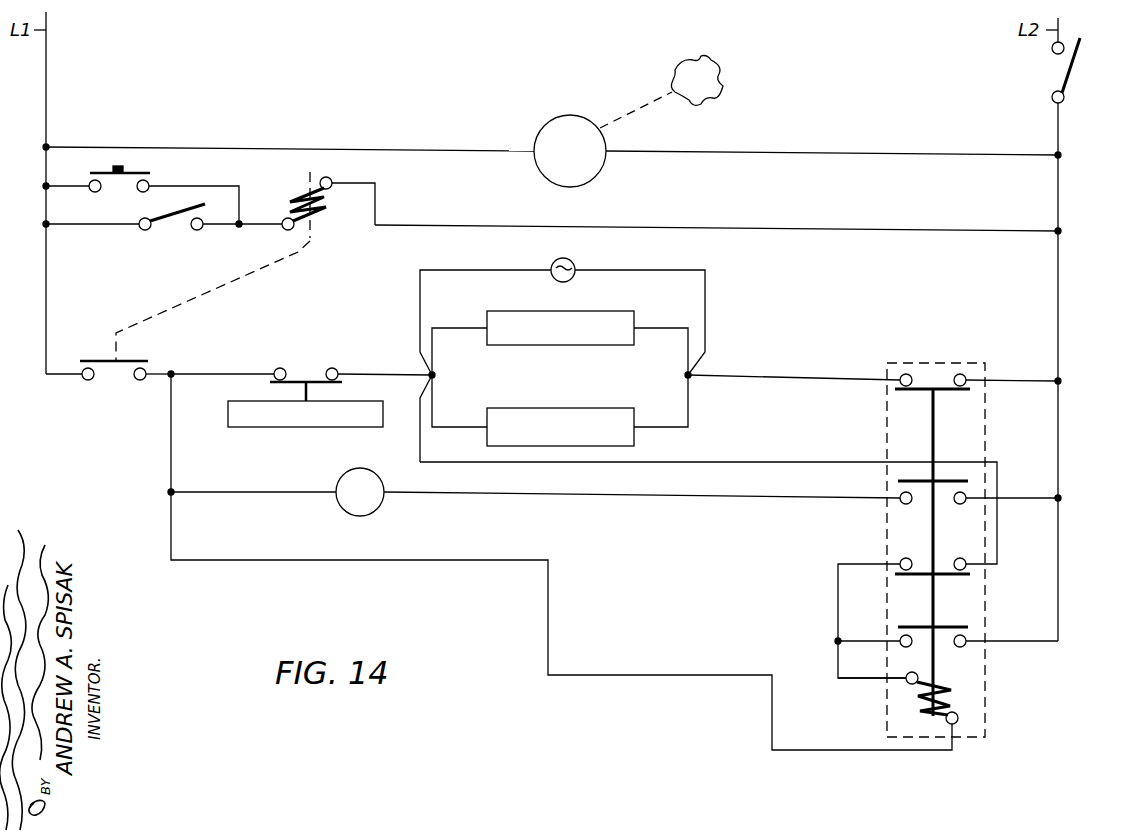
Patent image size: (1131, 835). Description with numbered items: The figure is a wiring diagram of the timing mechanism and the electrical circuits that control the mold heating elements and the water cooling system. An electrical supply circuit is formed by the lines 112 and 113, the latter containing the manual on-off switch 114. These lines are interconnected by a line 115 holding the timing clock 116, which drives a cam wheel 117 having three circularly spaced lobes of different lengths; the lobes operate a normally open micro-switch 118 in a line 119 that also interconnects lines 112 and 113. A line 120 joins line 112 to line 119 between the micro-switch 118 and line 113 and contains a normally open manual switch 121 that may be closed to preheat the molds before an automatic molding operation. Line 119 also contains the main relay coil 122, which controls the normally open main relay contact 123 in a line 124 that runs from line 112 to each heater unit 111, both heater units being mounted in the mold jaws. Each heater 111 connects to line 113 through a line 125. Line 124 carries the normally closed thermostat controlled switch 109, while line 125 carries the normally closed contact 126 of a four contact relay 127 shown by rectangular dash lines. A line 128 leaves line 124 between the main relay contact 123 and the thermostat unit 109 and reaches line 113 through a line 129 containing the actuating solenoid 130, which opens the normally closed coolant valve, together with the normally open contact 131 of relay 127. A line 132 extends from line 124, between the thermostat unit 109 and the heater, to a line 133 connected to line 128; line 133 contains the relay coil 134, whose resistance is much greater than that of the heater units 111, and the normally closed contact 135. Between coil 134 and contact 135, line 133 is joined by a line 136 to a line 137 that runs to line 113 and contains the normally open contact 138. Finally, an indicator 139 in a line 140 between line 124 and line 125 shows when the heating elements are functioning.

The thermostat controlled switch 109 is at (312, 426).
The electrical heater unit 111 is at (620, 312).
The supply line 112 is at (46, 64).
The supply line 113 is at (1060, 120).
The manual on-off switch 114 is at (1072, 70).
The line 115 is at (442, 146).
The timing clock 116 is at (589, 118).
The cam wheel 117 is at (678, 72).
The micro-switch 118 is at (176, 226).
The line 119 is at (482, 223).
The line 120 is at (218, 178).
The manual switch 121 is at (108, 170).
The main relay coil 122 is at (318, 206).
The main relay contact 123 is at (118, 360).
The line 124 is at (236, 364).
The line 125 is at (787, 376).
The normally closed contact 126 is at (931, 378).
The four contact relay 127 is at (985, 410).
The line 128 is at (171, 524).
The line 129 is at (582, 498).
The actuating solenoid 130 is at (338, 478).
The normally open contact 131 is at (898, 484).
The line 132 is at (776, 460).
The line 133 is at (878, 698).
The relay coil 134 is at (946, 700).
The normally closed contact 135 is at (912, 564).
The line 136 is at (838, 610).
The line 137 is at (1040, 638).
The normally open contact 138 is at (924, 616).
The indicator 139 is at (572, 262).
The line 140 is at (506, 266).